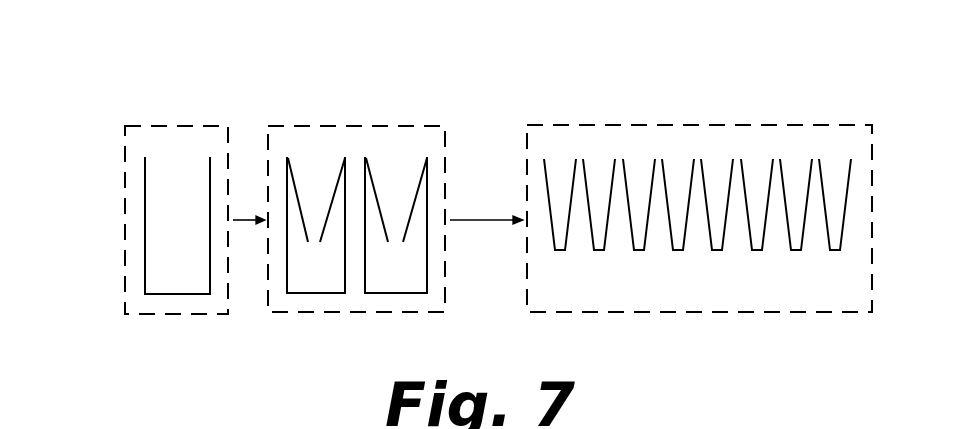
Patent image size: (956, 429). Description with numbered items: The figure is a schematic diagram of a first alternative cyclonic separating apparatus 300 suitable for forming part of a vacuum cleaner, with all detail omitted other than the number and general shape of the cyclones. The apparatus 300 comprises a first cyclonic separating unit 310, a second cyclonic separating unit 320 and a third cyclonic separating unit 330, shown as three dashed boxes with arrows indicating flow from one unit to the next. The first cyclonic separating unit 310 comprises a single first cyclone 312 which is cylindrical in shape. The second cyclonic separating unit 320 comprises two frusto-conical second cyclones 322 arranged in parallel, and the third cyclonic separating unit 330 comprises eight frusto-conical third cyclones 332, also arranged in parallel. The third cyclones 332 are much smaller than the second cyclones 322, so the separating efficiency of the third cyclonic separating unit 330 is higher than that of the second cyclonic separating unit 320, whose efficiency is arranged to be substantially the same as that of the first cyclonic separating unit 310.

The cyclonic separating apparatus 300 is at (258, 118).
The first cyclonic separating unit 310 is at (125, 243).
The first cyclone 312 is at (147, 182).
The second cyclonic separating unit 320 is at (366, 126).
The second cyclones 322 is at (405, 228).
The third cyclonic separating unit 330 is at (668, 125).
The third cyclones 332 is at (670, 240).